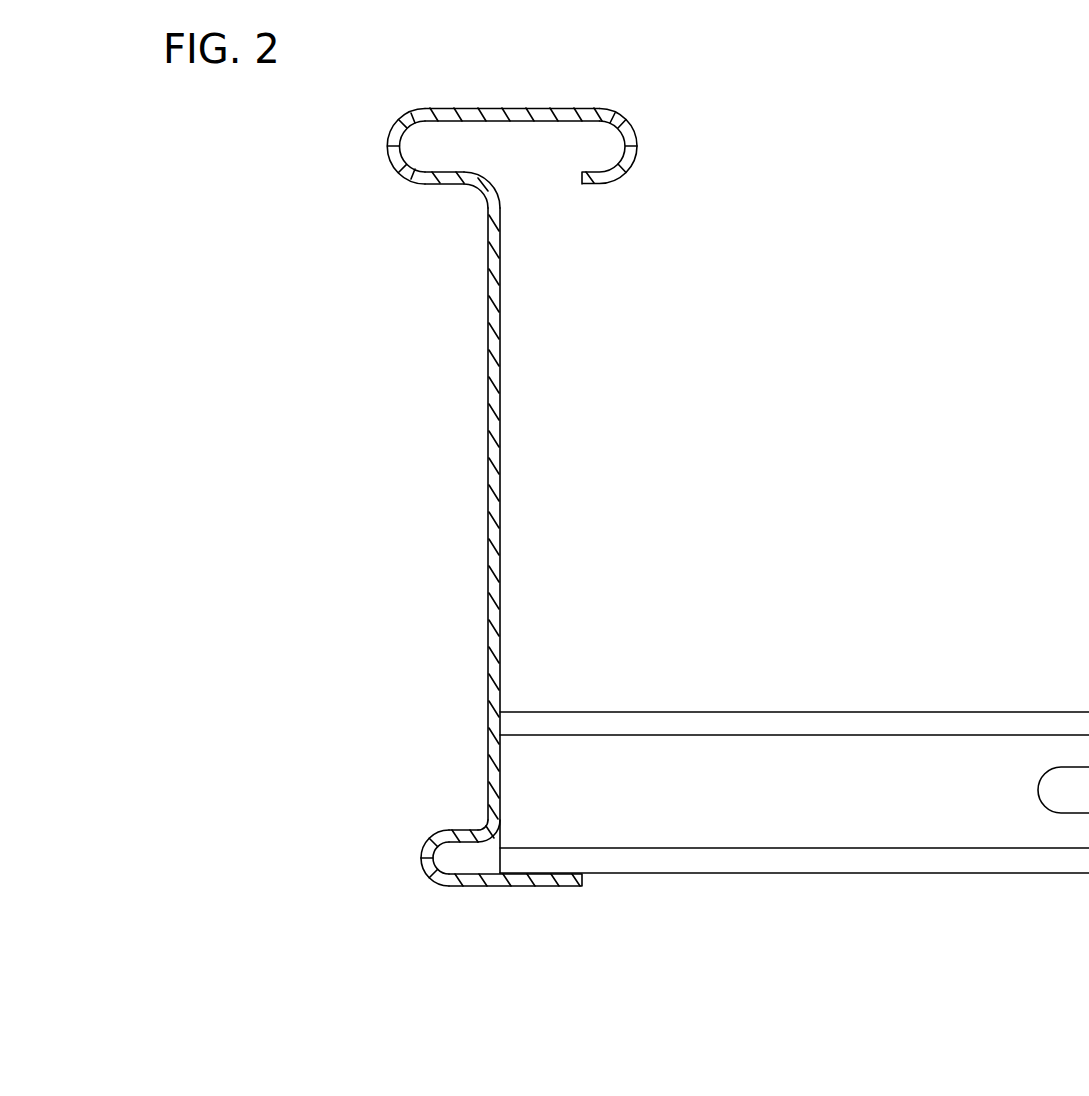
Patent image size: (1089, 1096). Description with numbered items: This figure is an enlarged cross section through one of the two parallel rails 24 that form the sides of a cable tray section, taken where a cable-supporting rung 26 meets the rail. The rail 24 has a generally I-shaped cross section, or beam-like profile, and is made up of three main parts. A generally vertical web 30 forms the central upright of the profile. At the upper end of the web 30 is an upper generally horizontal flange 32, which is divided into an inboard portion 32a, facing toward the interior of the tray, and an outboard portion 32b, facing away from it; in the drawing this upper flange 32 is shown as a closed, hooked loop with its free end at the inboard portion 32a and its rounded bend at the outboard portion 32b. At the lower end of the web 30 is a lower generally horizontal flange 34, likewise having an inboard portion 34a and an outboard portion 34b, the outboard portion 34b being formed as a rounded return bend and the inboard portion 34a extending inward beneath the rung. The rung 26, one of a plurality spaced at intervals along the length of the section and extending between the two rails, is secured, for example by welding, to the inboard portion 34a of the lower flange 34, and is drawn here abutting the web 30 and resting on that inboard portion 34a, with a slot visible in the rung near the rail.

The rail 24 is at (292, 369).
The cable-supporting rung 26 is at (818, 718).
The web 30 is at (500, 524).
The upper flange 32 is at (509, 108).
The inboard portion of upper flange 32a is at (635, 137).
The outboard portion of upper flange 32b is at (394, 143).
The lower flange 34 is at (504, 890).
The inboard portion of lower flange 34a is at (570, 890).
The outboard portion of lower flange 34b is at (423, 857).